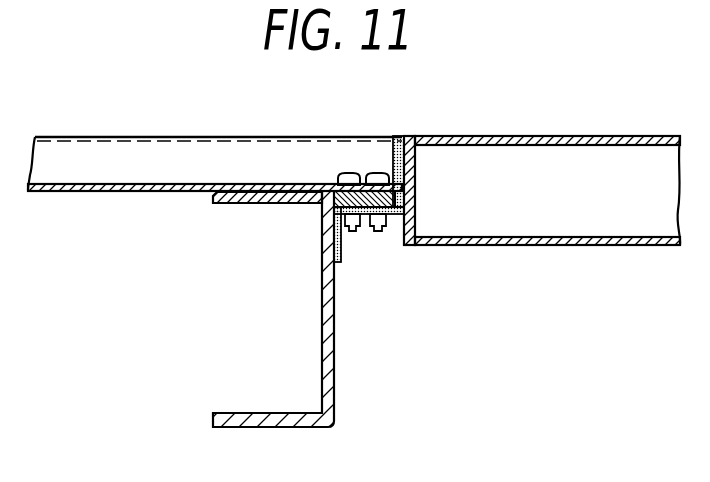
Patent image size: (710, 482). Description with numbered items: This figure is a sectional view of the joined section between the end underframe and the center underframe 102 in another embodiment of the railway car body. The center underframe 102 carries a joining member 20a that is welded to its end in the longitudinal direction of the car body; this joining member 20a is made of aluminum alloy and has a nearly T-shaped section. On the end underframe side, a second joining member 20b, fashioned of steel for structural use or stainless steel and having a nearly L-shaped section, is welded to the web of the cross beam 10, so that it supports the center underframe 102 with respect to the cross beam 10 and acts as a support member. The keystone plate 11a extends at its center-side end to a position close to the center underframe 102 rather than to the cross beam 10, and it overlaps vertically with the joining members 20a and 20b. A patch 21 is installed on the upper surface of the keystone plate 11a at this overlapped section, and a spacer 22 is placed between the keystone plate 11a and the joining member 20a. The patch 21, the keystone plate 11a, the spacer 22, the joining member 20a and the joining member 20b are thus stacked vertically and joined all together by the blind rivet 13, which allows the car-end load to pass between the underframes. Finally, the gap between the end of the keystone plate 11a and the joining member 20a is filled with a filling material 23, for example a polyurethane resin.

The keystone plate 11a is at (207, 137).
The center underframe 102 is at (555, 136).
The joining member 20a is at (411, 136).
The filling material 23 is at (400, 136).
The blind rivet 13 is at (353, 173).
The joining member 20b is at (341, 256).
The patch 21 is at (347, 173).
The spacer 22 is at (322, 208).
The cross beam 10 is at (241, 420).